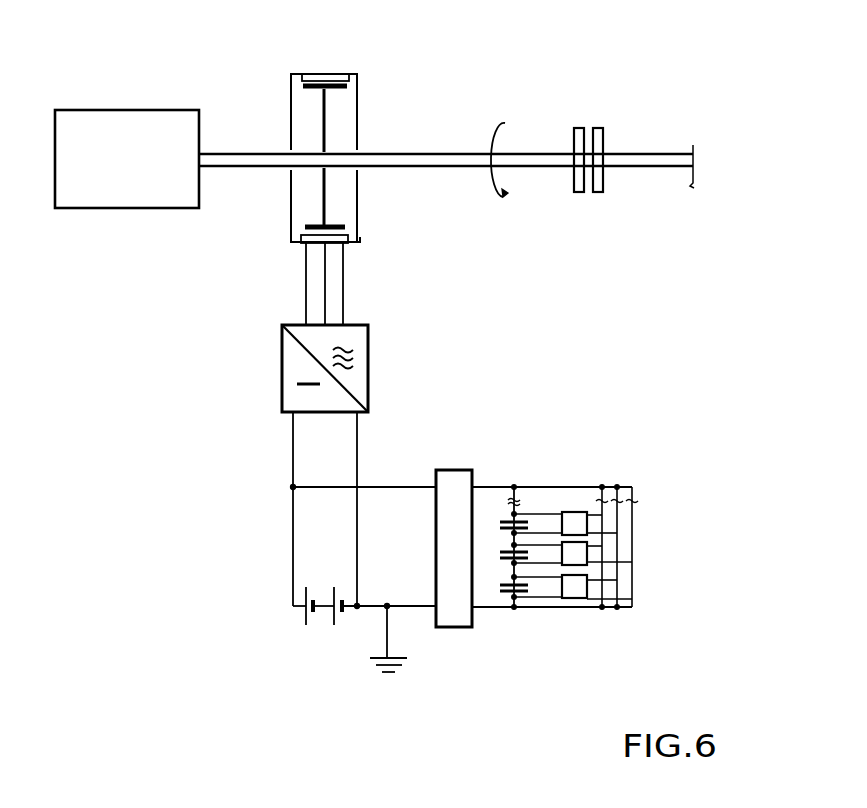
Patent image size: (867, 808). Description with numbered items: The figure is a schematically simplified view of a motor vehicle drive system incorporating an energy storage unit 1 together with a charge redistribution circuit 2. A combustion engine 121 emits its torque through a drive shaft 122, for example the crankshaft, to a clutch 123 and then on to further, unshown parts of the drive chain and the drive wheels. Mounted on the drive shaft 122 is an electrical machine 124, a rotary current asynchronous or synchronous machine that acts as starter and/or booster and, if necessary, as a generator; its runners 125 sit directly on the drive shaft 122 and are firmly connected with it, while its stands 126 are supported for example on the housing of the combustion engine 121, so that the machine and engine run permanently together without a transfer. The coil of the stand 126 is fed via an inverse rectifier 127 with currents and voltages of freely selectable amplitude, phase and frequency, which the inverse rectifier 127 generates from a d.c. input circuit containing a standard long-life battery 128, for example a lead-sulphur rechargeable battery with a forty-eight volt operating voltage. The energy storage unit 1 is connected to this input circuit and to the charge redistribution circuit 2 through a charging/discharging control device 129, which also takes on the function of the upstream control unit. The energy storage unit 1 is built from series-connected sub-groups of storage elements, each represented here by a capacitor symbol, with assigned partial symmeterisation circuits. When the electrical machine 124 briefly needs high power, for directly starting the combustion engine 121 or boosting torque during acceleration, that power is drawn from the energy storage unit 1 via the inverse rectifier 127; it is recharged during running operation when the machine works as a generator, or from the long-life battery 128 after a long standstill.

The energy storage unit 1 is at (562, 432).
The charge redistribution circuit 2 is at (592, 628).
The combustion engine 121 is at (117, 127).
The drive shaft 122 is at (427, 155).
The clutch 123 is at (588, 128).
The electrical machine 124 is at (360, 100).
The runners 125 is at (322, 211).
The stands 126 is at (349, 250).
The inverse rectifier 127 is at (370, 367).
The long-life battery 128 is at (323, 613).
The charging/discharging control device 129 is at (455, 613).